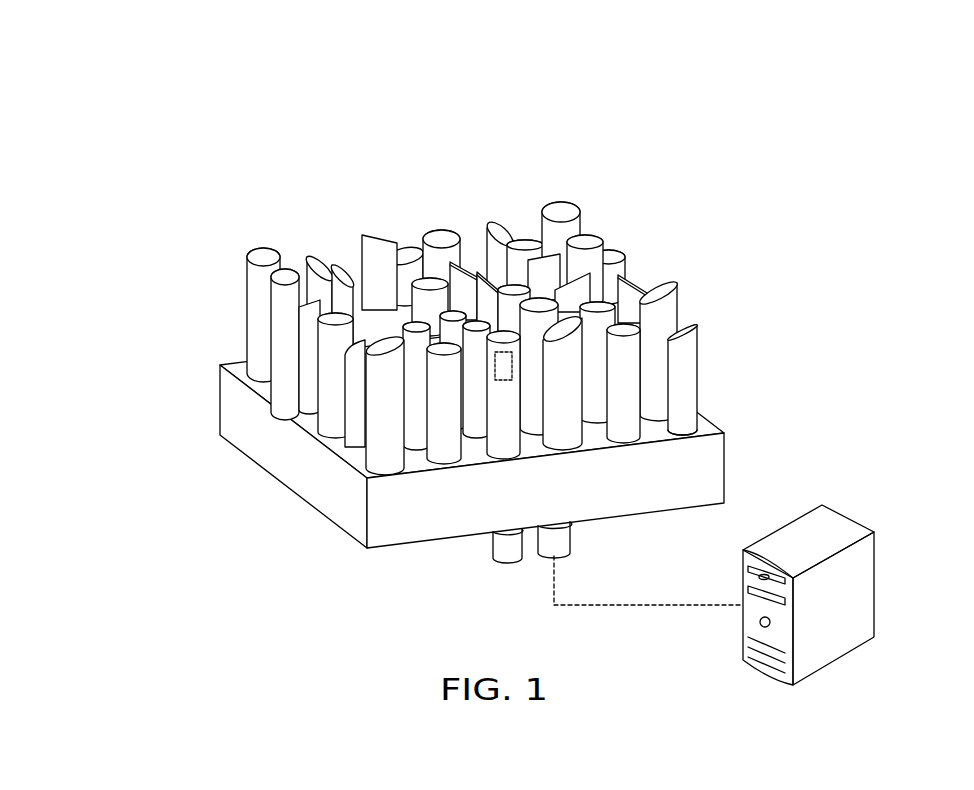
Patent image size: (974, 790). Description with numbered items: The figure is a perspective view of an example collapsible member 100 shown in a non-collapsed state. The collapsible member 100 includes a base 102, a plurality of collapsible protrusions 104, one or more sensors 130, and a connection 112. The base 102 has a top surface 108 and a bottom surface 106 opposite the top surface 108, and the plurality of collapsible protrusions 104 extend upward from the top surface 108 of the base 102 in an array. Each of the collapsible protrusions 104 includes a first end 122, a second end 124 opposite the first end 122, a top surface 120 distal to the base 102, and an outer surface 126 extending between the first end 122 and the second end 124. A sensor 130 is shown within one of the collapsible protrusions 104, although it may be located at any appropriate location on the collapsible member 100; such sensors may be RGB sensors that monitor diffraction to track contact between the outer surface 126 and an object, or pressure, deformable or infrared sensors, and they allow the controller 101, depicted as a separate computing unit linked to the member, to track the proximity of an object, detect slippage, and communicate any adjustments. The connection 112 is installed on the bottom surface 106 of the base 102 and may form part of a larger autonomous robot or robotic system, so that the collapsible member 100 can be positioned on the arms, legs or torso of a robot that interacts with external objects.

The collapsible member 100 is at (777, 133).
The controller 101 is at (875, 585).
The base 102 is at (505, 443).
The collapsible protrusions 104 is at (235, 258).
The bottom surface 106 is at (313, 510).
The top surface 108 is at (285, 403).
The connection 112 is at (573, 522).
The top surface 120 is at (665, 289).
The first end 122 is at (690, 317).
The second end 124 is at (687, 423).
The outer surface 126 is at (716, 362).
The sensor 130 is at (512, 367).